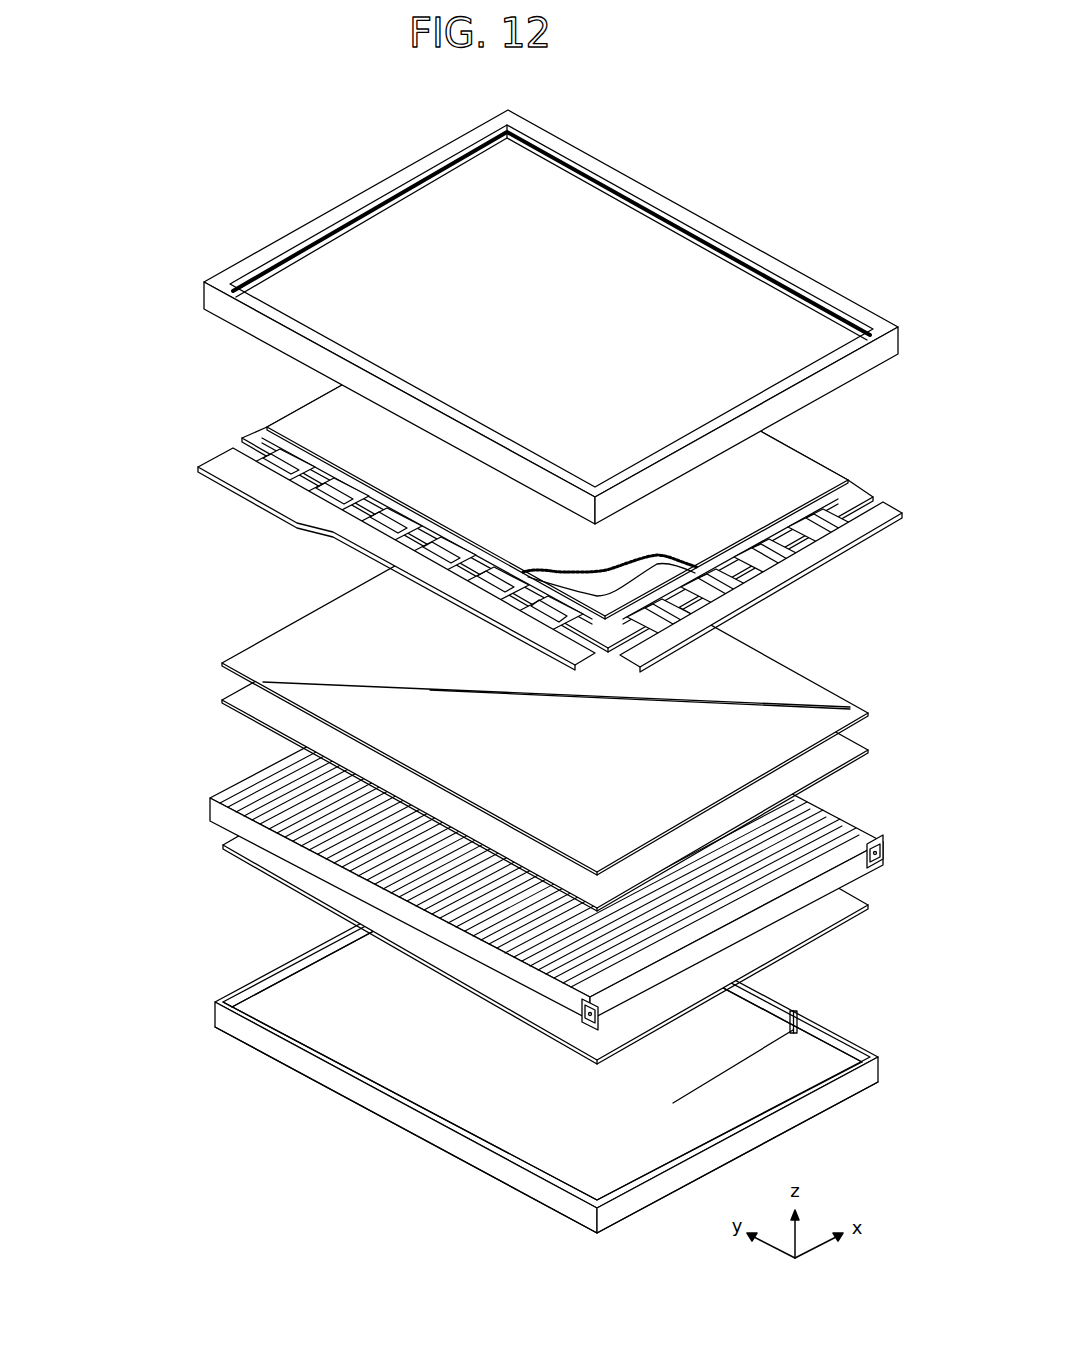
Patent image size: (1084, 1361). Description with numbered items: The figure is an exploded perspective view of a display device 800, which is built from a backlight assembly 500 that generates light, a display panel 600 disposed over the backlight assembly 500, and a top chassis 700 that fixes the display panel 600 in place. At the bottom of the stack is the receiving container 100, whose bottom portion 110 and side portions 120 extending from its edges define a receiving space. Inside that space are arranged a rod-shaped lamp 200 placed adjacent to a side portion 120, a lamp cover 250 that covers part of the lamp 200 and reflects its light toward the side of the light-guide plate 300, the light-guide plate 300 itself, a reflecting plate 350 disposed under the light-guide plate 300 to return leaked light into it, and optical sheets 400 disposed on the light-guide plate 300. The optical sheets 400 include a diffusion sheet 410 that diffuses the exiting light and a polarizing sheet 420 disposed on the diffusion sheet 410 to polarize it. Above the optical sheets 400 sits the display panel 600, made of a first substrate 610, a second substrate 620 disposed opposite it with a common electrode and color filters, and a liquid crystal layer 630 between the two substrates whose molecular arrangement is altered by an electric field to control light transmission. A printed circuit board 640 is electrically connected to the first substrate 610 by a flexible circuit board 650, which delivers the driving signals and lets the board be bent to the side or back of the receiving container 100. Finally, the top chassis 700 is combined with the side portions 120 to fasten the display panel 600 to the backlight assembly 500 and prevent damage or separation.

The receiving container 100 is at (546, 1050).
The bottom portion 110 is at (470, 1112).
The side portions 120 is at (385, 1198).
The lamp 200 is at (603, 1015).
The lamp cover 250 is at (578, 1015).
The light-guide plate 300 is at (237, 790).
The reflecting plate 350 is at (237, 840).
The optical sheets 400 is at (148, 633).
The diffusion sheet 410 is at (233, 700).
The polarizing sheet 420 is at (233, 662).
The backlight assembly 500 is at (97, 1185).
The display panel 600 is at (284, 395).
The first substrate 610 is at (850, 497).
The second substrate 620 is at (810, 475).
The liquid crystal layer 630 is at (647, 562).
The printed circuit board 640 is at (280, 500).
The flexible circuit board 650 is at (270, 472).
The top chassis 700 is at (253, 257).
The display device 800 is at (268, 140).